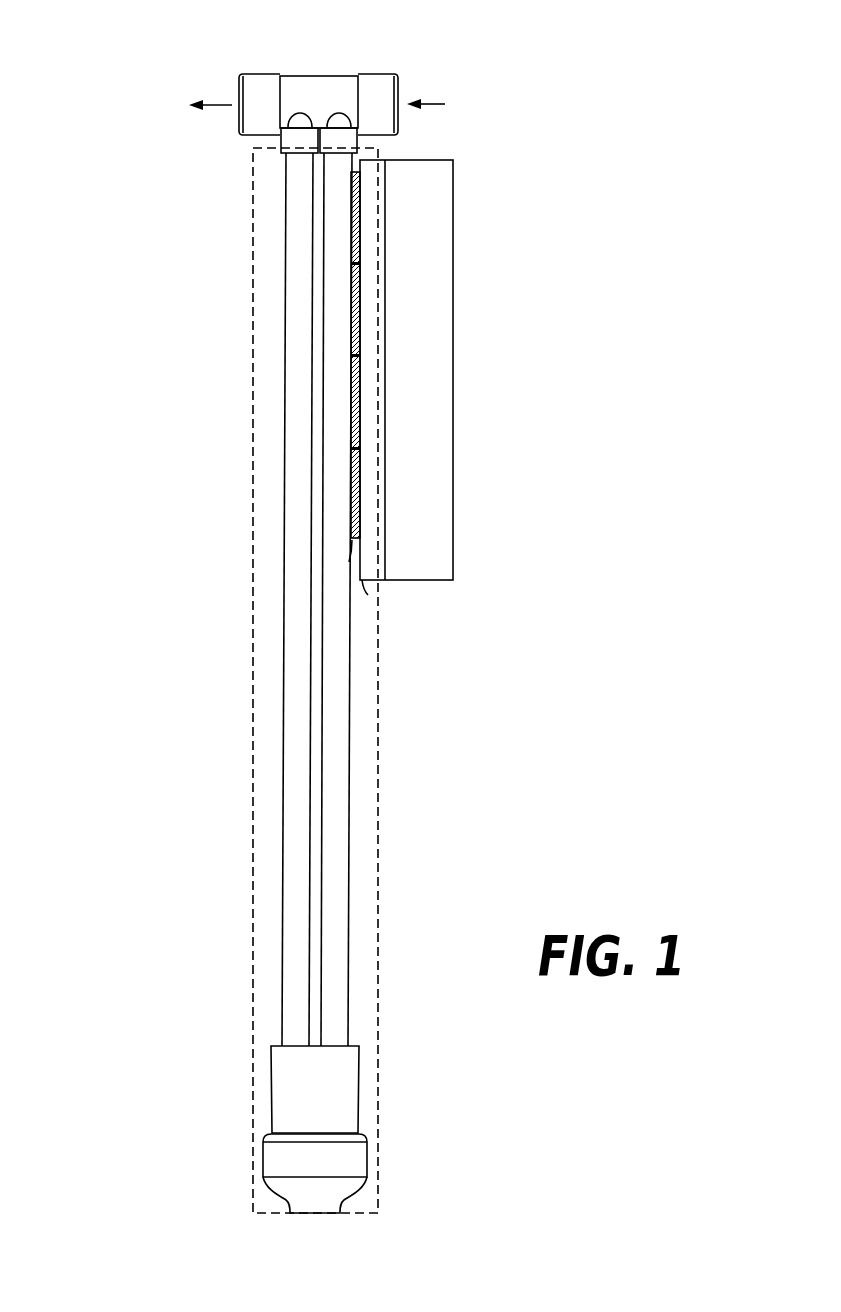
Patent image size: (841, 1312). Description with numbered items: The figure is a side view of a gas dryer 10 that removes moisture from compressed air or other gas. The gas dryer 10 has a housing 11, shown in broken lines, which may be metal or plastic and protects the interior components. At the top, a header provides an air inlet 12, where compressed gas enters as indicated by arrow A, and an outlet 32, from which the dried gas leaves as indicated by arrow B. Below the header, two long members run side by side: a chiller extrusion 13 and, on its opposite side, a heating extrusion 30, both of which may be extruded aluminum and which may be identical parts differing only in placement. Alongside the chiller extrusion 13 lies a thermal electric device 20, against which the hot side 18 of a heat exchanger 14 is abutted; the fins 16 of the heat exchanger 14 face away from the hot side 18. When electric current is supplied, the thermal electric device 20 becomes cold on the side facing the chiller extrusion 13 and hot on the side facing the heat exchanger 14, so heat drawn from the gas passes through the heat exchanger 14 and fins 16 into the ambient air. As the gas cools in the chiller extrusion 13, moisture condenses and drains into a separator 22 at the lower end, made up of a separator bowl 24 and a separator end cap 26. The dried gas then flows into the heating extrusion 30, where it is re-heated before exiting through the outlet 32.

The gas dryer 10 is at (614, 282).
The housing 11 is at (376, 740).
The air inlet 12 is at (398, 74).
The chiller extrusion 13 is at (340, 840).
The heat exchanger 14 is at (370, 160).
The fins 16 is at (443, 238).
The hot side 18 is at (368, 595).
The thermal electric device 20 is at (349, 562).
The separator 22 is at (428, 1118).
The separator bowl 24 is at (346, 1083).
The separator end cap 26 is at (358, 1157).
The heating extrusion 30 is at (287, 784).
The outlet 32 is at (238, 117).